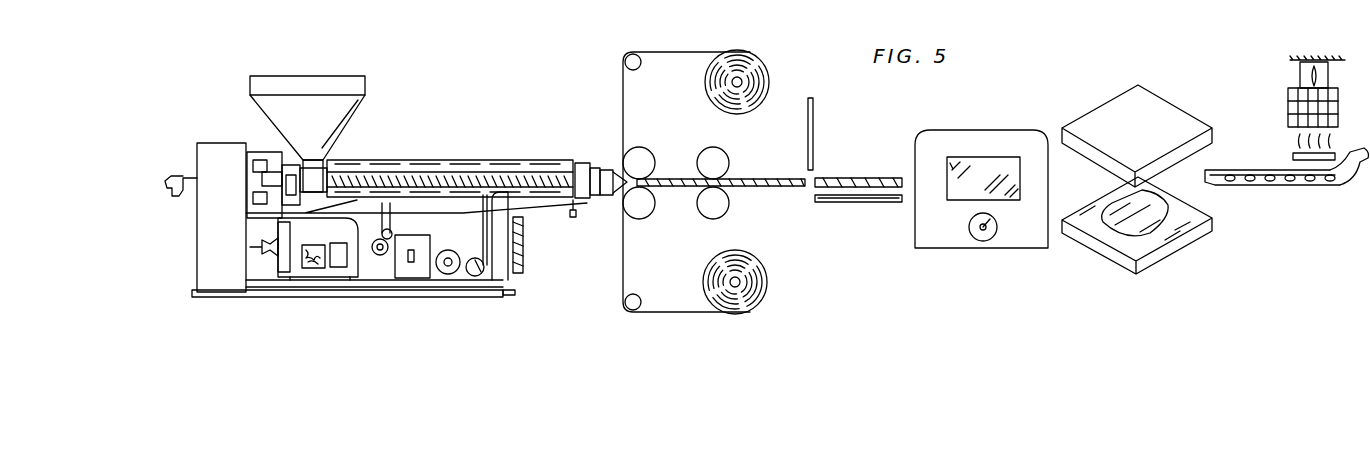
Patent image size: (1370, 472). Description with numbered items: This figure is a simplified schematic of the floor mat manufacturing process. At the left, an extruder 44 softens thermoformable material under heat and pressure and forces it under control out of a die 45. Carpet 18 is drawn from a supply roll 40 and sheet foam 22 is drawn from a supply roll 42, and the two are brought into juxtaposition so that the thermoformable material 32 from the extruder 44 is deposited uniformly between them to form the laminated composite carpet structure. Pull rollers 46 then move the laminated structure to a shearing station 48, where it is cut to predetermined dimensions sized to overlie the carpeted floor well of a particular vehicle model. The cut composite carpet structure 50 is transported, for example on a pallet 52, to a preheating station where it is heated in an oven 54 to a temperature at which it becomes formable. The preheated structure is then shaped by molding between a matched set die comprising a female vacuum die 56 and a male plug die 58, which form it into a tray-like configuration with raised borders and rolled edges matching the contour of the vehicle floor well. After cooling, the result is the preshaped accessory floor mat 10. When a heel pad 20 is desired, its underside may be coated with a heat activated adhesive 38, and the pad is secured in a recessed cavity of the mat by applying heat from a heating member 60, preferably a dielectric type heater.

The accessory floor mat 10 is at (1335, 187).
The carpet 18 is at (623, 80).
The heel pad 20 is at (1293, 156).
The sheet foam 22 is at (606, 252).
The thermoformable material 32 is at (672, 178).
The heat activated adhesive 38 is at (1288, 168).
The supply roll 40 is at (769, 82).
The supply roll 42 is at (707, 268).
The extruder 44 is at (487, 125).
The die 45 is at (612, 170).
The pull rollers 46 is at (728, 156).
The shearing station 48 is at (815, 138).
The cut composite carpet structure 50 is at (882, 177).
The pallet 52 is at (870, 203).
The oven 54 is at (1003, 132).
The female vacuum die 56 is at (1183, 242).
The male plug die 58 is at (1157, 95).
The heating member 60 is at (1290, 100).